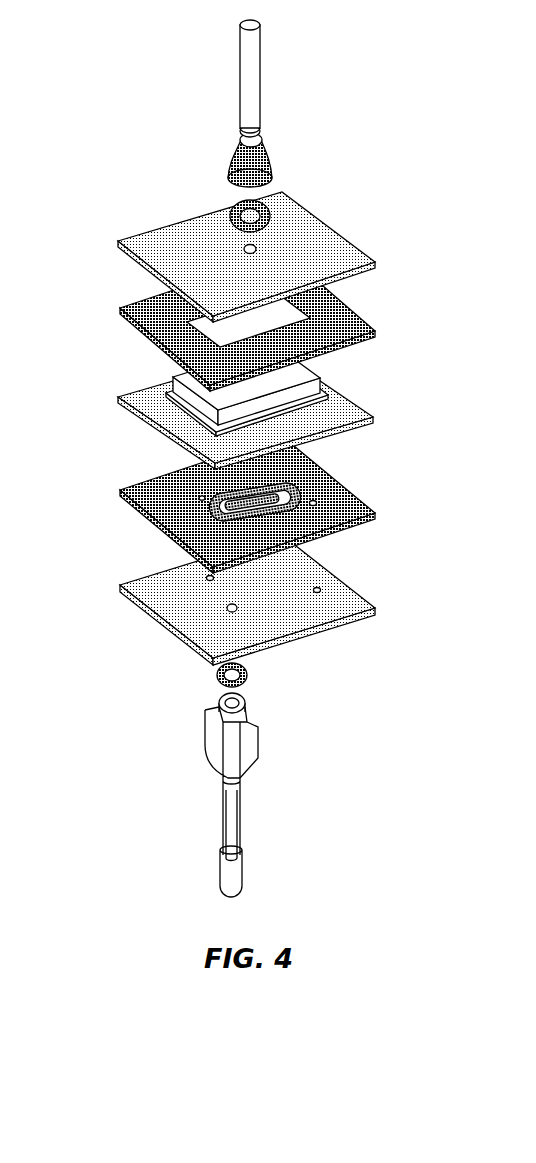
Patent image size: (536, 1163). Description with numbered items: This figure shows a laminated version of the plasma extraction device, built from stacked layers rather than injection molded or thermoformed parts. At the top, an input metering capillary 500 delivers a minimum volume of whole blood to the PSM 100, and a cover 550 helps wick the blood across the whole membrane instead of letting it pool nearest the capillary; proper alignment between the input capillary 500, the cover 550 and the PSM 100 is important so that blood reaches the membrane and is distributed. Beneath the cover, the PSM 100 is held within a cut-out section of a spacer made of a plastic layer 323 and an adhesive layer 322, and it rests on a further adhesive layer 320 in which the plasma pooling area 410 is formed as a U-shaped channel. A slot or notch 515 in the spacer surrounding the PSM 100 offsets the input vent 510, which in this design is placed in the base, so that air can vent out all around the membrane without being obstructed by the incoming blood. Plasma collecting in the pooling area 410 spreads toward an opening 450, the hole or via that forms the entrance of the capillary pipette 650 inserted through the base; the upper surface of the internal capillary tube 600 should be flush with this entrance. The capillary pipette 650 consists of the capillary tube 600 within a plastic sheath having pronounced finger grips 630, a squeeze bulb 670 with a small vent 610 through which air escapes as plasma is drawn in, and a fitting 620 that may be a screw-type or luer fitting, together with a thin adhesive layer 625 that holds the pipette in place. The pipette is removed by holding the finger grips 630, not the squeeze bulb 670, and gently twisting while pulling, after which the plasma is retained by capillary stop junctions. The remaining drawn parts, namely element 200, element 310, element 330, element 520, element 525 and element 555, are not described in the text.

The PSM 100 is at (313, 380).
The slot structure 200 is at (172, 477).
The bottom plate 310 is at (175, 605).
The adhesive layer 320 is at (317, 503).
The adhesive layer 322 is at (120, 307).
The plastic layer 323 is at (127, 400).
The through hole 330 is at (203, 575).
The plasma pooling area 410 is at (317, 467).
The opening 450 is at (237, 611).
The input metering capillary 500 is at (255, 65).
The input vent 510 is at (320, 588).
The slot or notch 515 is at (318, 407).
The knob 520 is at (262, 163).
The ring 525 is at (270, 213).
The cover 550 is at (163, 233).
The top plate hole 555 is at (257, 250).
The capillary tube 600 is at (240, 698).
The vent in the squeeze bulb 610 is at (230, 878).
The fitting 620 is at (223, 718).
The thin adhesive layer 625 is at (216, 677).
The finger grips 630 is at (250, 743).
The capillary pipette 650 is at (221, 797).
The squeeze bulb 670 is at (244, 875).